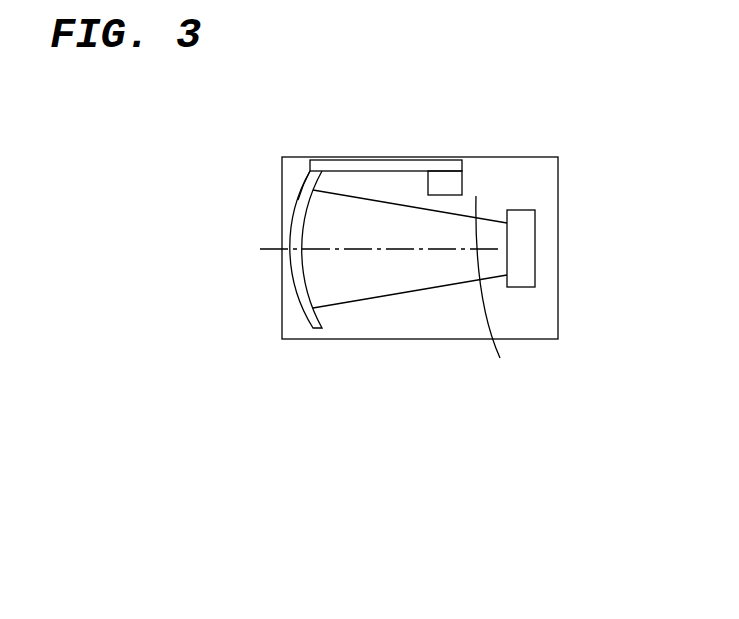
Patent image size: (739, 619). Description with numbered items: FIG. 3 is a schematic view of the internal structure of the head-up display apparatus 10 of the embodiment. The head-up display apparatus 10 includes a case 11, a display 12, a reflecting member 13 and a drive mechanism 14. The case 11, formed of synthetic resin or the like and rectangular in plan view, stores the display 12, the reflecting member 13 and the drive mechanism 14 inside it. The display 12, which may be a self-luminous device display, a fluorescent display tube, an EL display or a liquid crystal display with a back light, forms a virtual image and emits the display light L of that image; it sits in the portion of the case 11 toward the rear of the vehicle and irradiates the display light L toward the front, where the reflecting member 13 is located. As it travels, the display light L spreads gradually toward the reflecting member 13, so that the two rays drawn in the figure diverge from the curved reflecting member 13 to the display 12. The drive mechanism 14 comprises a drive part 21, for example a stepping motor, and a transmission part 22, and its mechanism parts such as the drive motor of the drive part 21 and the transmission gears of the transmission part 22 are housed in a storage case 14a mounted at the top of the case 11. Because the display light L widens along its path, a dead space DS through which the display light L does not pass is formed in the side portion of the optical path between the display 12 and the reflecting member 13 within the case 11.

The head-up display apparatus 10 is at (420, 241).
The case 11 is at (434, 340).
The display 12 is at (527, 238).
The reflecting member 13 is at (290, 287).
The drive mechanism 14 is at (350, 177).
The storage case 14a is at (412, 163).
The drive part 21 is at (457, 182).
The transmission part 22 is at (386, 123).
The display light L is at (380, 297).
The dead space DS is at (493, 301).